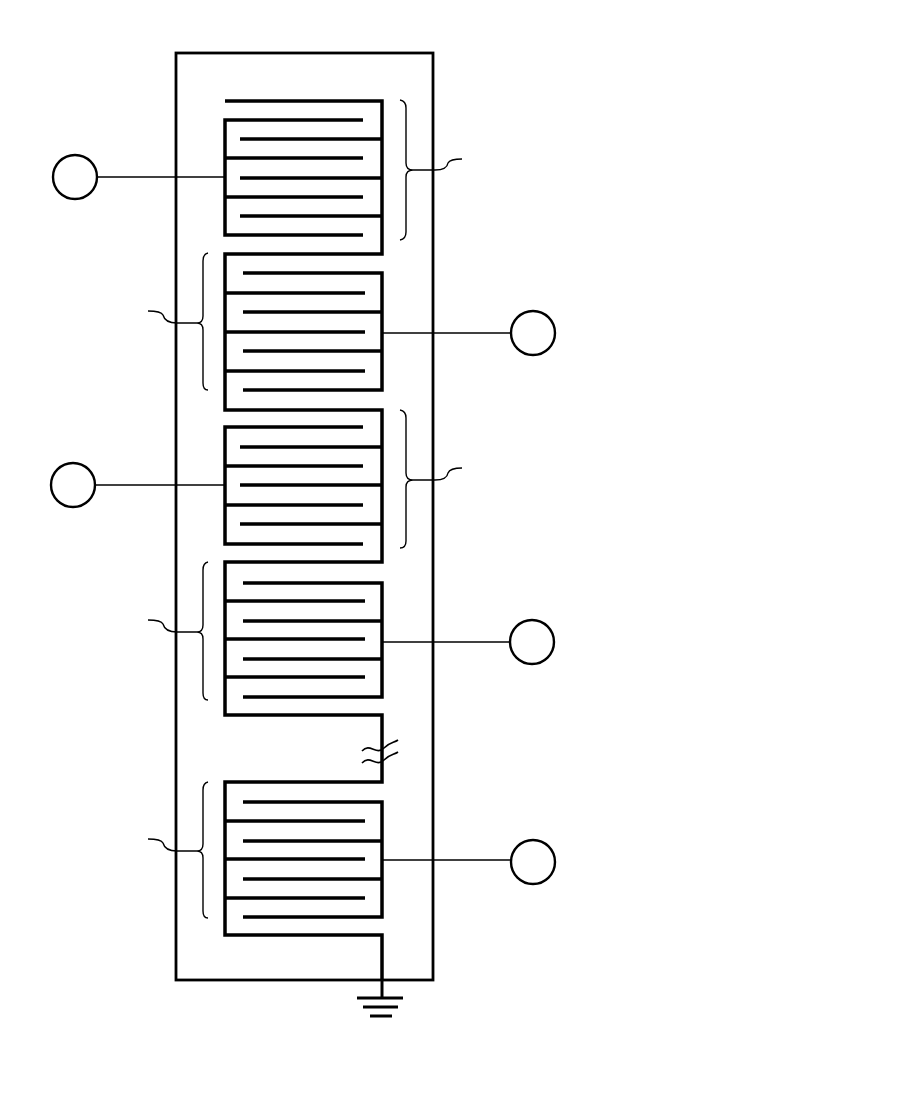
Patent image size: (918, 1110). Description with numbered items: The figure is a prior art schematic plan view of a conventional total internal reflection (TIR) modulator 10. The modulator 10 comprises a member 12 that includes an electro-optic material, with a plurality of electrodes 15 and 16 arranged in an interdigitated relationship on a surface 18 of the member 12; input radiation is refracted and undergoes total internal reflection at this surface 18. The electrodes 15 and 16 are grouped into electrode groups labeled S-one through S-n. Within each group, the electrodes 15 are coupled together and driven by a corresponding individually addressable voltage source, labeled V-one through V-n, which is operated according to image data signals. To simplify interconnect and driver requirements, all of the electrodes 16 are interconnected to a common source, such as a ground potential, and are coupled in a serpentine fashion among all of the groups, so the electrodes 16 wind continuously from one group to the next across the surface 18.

The TIR modulator 10 is at (522, 41).
The member 12 is at (175, 960).
The electrodes 15 is at (244, 157).
The electrodes 16 is at (278, 138).
The surface 18 is at (314, 972).